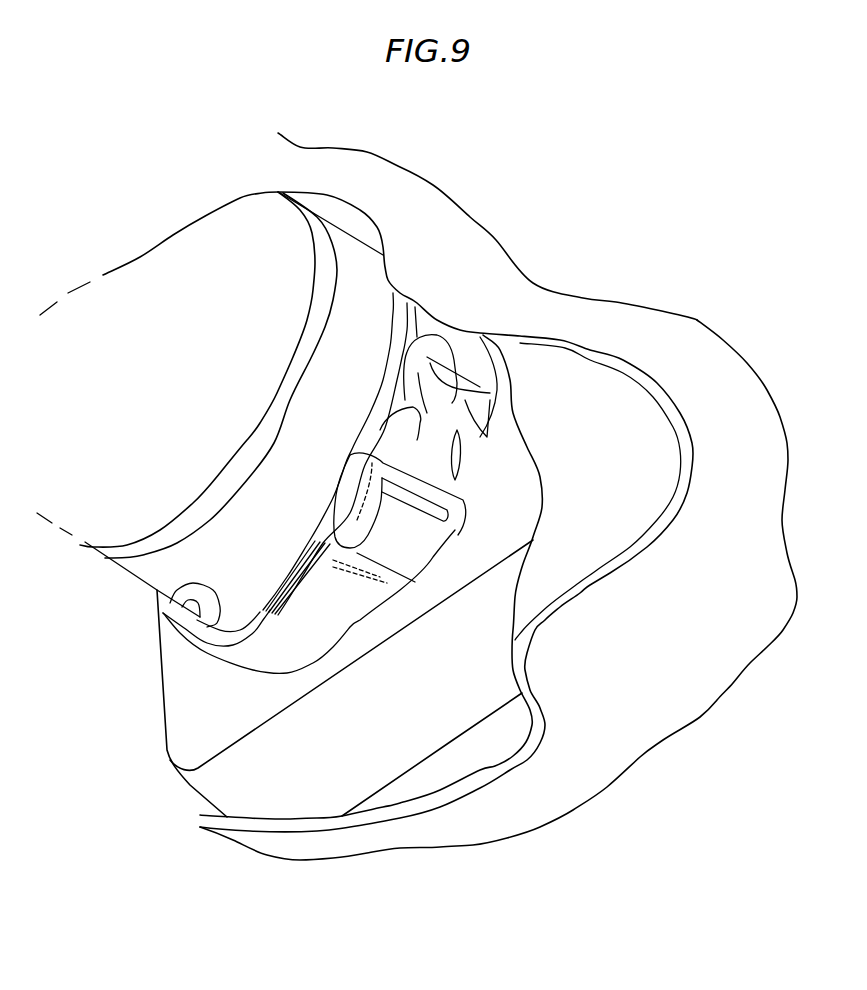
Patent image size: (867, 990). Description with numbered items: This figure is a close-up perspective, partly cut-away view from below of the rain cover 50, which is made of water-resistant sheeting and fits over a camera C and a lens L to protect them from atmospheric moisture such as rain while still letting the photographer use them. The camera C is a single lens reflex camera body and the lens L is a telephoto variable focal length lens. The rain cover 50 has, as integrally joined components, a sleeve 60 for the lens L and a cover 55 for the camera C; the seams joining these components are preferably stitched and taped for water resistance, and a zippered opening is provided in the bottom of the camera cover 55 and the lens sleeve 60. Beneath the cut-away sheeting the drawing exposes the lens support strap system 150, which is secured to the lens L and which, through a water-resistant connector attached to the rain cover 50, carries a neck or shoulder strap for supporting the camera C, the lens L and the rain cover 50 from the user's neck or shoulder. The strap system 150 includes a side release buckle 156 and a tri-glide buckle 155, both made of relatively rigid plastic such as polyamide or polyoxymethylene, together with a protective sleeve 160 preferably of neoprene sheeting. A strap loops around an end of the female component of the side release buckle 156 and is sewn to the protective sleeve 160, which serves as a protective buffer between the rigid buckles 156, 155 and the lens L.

The rain cover 50 is at (496, 240).
The camera cover 55 is at (635, 710).
The lens sleeve 60 is at (290, 162).
The lens support strap system 150 is at (362, 622).
The tri-glide buckle 155 is at (163, 600).
The side release buckle 156 is at (440, 478).
The protective sleeve 160 is at (310, 540).
The lens L is at (110, 515).
The camera C is at (220, 782).